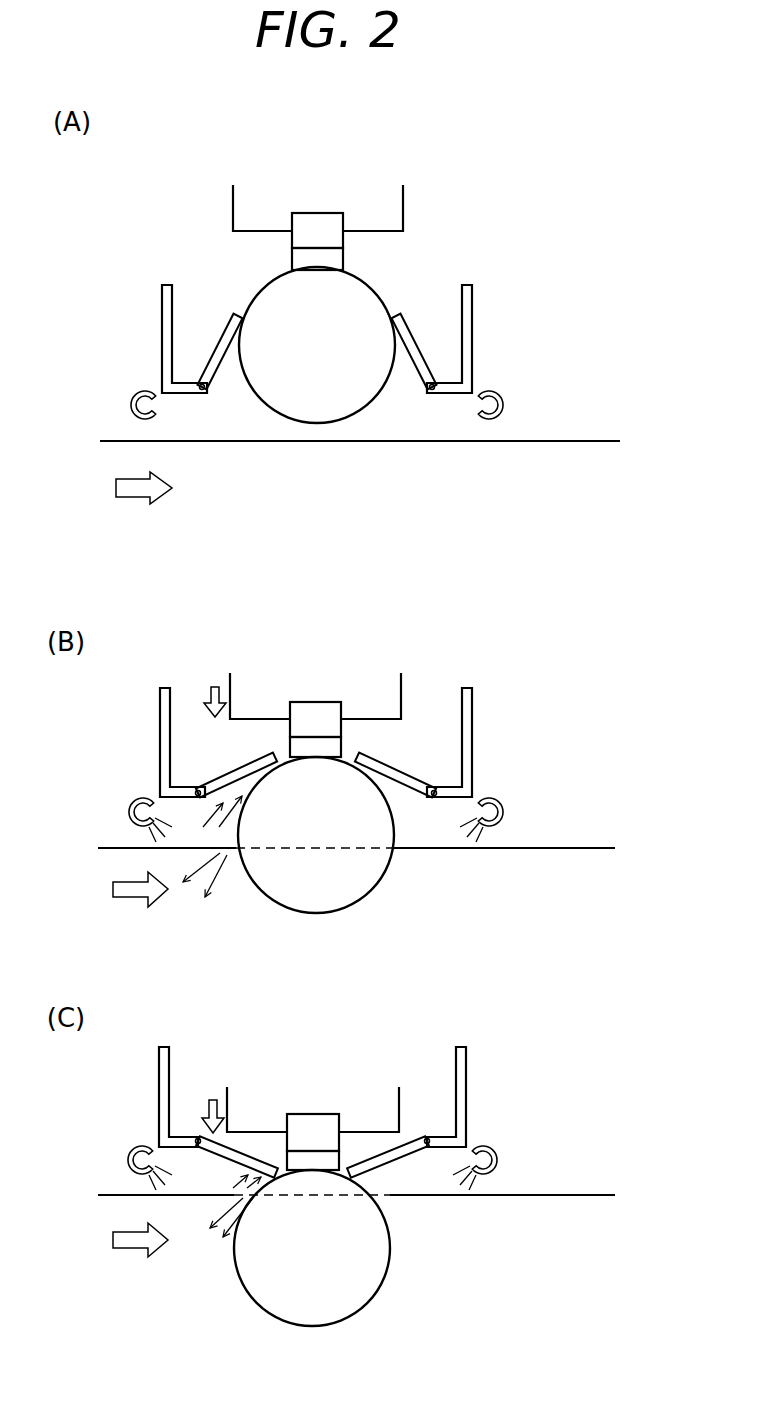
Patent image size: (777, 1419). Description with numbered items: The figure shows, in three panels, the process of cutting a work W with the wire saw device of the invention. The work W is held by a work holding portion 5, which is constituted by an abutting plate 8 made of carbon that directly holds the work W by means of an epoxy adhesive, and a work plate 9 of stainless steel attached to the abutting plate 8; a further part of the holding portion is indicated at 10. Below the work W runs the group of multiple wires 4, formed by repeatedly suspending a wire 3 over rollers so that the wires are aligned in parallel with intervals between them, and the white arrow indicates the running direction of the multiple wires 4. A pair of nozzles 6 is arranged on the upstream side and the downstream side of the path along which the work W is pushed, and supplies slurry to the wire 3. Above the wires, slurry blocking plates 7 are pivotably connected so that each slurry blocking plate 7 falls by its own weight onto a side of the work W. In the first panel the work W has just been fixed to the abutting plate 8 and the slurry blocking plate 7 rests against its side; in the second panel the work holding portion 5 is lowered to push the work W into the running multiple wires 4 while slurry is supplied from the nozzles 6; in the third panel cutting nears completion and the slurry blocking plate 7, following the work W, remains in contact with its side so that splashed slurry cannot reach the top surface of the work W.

The wire 3 is at (572, 441).
The group of multiple wires 4 is at (240, 442).
The work holding portion 5 is at (340, 628).
The nozzle 6 is at (141, 392).
The slurry blocking plate 7 is at (221, 338).
The abutting plate 8 is at (307, 257).
The work plate 9 is at (328, 223).
The frame 10 is at (360, 213).
The work W is at (305, 359).